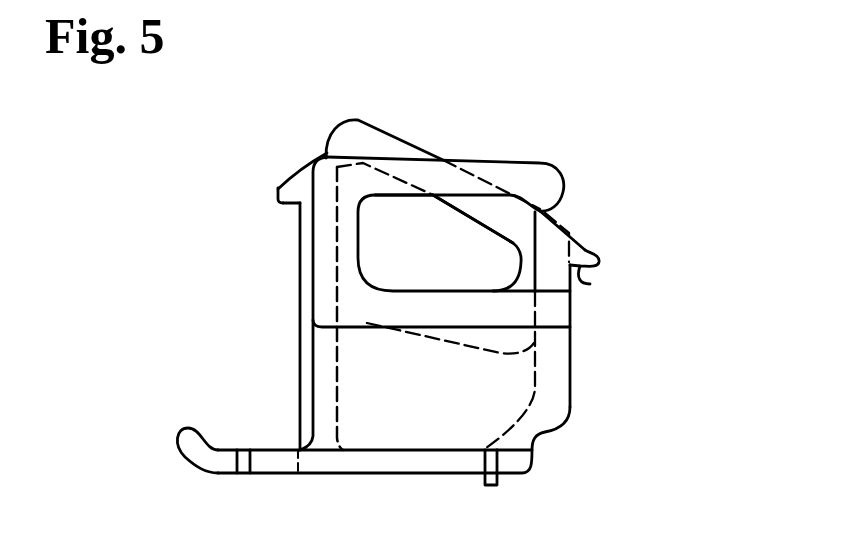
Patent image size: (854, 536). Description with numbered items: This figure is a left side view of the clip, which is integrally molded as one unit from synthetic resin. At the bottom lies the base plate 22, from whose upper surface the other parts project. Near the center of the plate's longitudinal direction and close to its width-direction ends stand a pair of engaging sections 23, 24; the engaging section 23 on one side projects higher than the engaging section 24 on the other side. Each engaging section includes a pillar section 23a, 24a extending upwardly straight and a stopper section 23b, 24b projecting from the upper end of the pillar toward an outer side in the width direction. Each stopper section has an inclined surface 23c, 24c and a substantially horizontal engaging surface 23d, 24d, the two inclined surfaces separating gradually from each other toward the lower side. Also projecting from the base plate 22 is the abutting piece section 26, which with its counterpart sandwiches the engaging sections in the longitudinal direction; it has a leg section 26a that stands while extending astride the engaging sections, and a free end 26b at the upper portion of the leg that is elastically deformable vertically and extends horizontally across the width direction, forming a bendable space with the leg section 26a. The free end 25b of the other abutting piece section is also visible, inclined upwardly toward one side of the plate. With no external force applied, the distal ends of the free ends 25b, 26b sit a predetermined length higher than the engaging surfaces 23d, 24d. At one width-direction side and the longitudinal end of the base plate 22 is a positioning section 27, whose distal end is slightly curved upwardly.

The base plate 22 is at (313, 463).
The engaging section 23 is at (131, 213).
The pillar section 23a is at (308, 307).
The stopper section 23b is at (278, 188).
The inclined surface 23c is at (297, 164).
The engaging surface 23d is at (290, 207).
The engaging section 24 is at (713, 223).
The pillar section 24a is at (552, 273).
The stopper section 24b is at (589, 249).
The inclined surface 24c is at (581, 228).
The engaging surface 24d is at (590, 284).
The free end 25b is at (353, 127).
The abutting piece section 26 is at (503, 277).
The leg section 26a is at (553, 402).
The free end 26b is at (433, 170).
The positioning section 27 is at (188, 447).